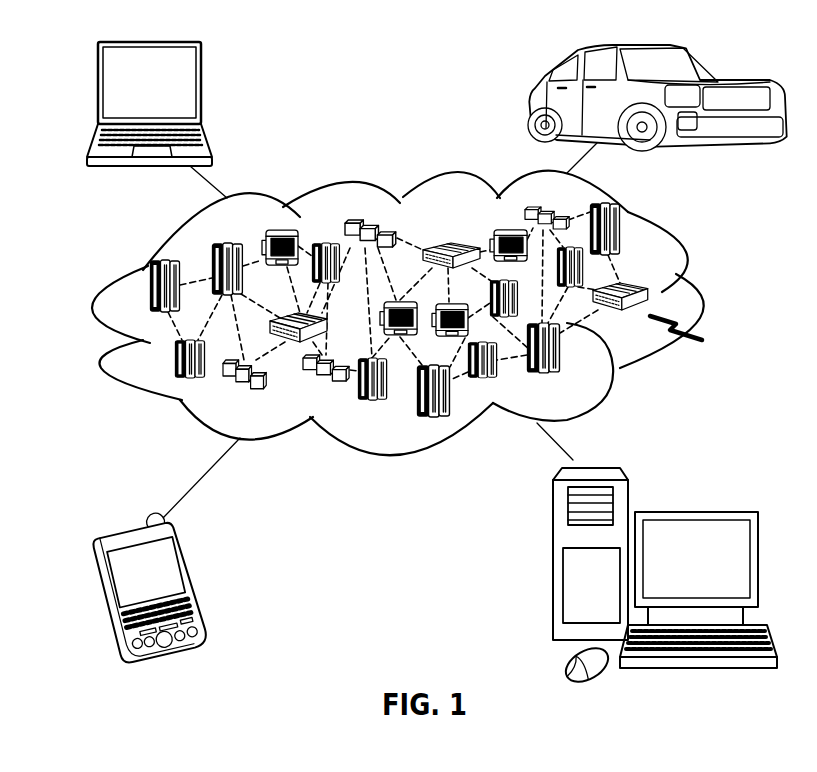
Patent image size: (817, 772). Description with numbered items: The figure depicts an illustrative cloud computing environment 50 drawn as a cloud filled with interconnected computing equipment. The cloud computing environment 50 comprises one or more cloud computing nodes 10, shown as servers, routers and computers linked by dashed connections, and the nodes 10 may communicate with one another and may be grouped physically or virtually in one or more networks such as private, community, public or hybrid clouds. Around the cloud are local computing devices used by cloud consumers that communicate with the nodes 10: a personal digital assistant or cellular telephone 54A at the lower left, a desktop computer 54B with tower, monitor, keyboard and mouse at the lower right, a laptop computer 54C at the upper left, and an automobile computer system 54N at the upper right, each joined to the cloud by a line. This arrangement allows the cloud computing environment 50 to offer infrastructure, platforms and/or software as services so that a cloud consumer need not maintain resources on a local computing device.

The cloud computing nodes 10 is at (687, 334).
The cloud computing environment 50 is at (698, 292).
The personal digital assistant or cellular telephone 54A is at (193, 583).
The desktop computer 54B is at (695, 511).
The laptop computer 54C is at (201, 89).
The automobile computer system 54N is at (531, 100).